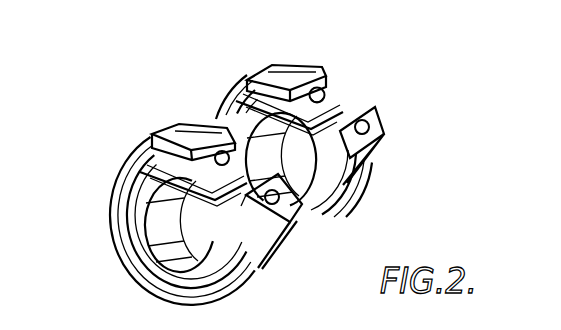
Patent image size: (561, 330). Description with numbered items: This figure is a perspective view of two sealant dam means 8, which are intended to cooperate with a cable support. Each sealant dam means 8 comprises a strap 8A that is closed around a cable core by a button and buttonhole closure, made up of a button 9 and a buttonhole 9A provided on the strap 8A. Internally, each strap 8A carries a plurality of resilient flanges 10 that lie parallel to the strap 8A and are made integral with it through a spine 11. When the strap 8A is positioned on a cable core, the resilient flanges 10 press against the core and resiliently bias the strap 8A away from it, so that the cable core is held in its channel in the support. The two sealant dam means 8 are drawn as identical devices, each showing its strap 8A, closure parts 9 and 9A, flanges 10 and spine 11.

The sealant dam means 8 is at (118, 153).
The strap 8A is at (188, 134).
The button 9 is at (217, 162).
The buttonhole 9A is at (276, 201).
The resilient flanges 10 is at (151, 254).
The spine 11 is at (218, 150).